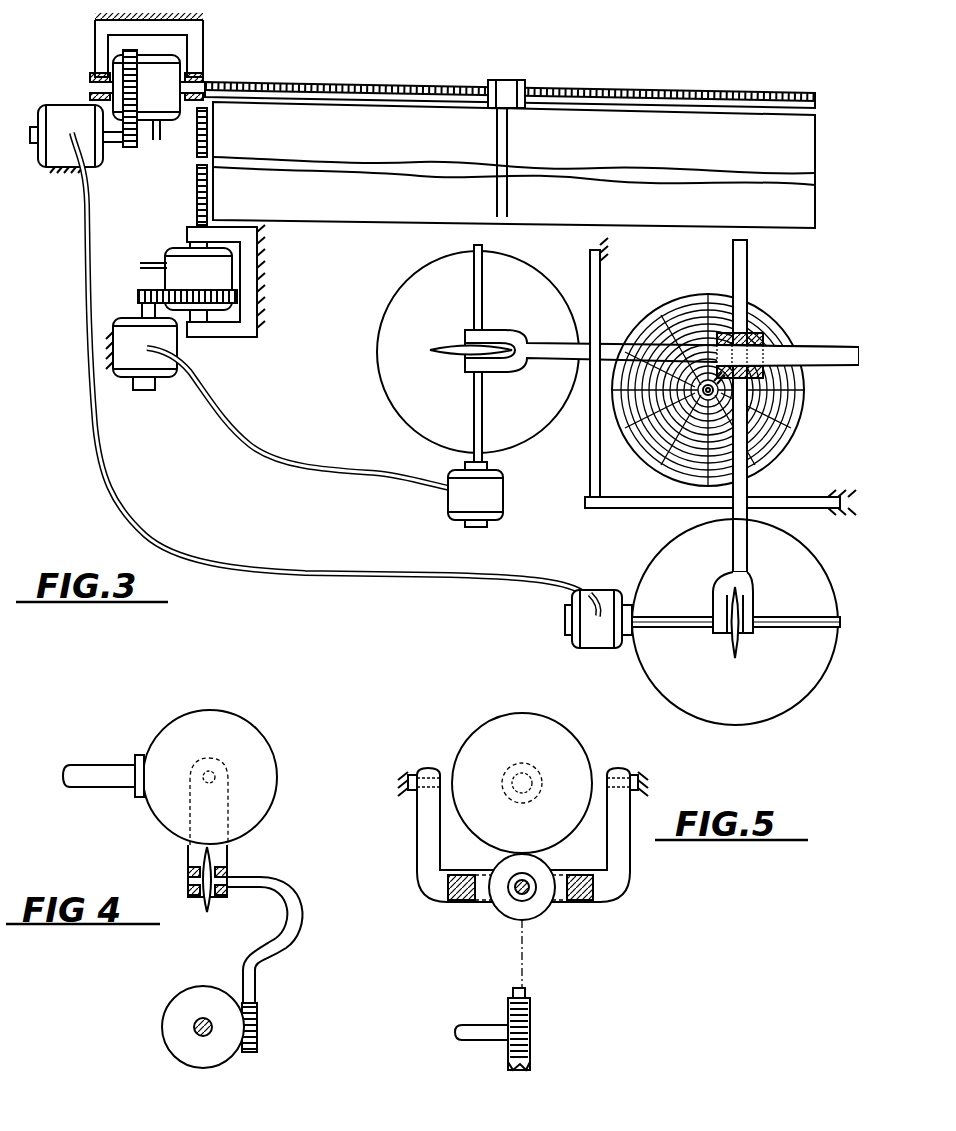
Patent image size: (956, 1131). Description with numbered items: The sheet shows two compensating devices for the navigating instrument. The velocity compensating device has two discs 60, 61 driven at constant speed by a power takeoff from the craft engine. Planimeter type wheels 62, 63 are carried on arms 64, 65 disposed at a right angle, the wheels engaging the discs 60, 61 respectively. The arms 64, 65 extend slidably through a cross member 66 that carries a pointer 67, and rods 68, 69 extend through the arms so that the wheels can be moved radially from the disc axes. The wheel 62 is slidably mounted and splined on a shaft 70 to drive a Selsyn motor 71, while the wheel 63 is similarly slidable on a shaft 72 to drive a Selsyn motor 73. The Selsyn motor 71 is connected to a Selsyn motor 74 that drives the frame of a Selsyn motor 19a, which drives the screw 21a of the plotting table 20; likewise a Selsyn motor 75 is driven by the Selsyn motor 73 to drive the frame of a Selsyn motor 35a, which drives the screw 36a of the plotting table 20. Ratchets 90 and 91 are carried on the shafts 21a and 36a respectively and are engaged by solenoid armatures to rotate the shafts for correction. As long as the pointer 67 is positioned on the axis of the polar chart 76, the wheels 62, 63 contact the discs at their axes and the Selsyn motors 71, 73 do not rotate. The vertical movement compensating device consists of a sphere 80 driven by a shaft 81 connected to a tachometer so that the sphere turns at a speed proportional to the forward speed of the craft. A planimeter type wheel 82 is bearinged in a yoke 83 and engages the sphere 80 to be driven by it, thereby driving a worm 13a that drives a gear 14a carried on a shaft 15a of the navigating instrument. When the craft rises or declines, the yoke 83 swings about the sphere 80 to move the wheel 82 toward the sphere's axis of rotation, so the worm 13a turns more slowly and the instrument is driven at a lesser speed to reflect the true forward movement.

In FIG. 4, the worm 13a is at (260, 1023).
In FIG. 5, the worm 13a is at (533, 1023).
In FIG. 4, the gear 14a is at (175, 1047).
In FIG. 5, the gear 14a is at (530, 1072).
In FIG. 4, the shaft 15a is at (204, 1037).
In FIG. 5, the shaft 15a is at (470, 1042).
In FIG. 3, the Selsyn motor 19a is at (218, 272).
In FIG. 3, the plotting table 20 is at (814, 166).
In FIG. 3, the screw 21a is at (209, 190).
In FIG. 3, the Selsyn motor 35a is at (165, 72).
In FIG. 3, the screw 36a is at (325, 88).
In FIG. 3, the disc 60 is at (405, 292).
In FIG. 3, the disc 61 is at (664, 560).
In FIG. 3, the planimeter type wheel 62 is at (434, 350).
In FIG. 3, the planimeter type wheel 63 is at (736, 650).
In FIG. 3, the arm 64 is at (558, 346).
In FIG. 3, the arm 65 is at (746, 545).
In FIG. 3, the cross member 66 is at (752, 333).
In FIG. 3, the pointer 67 is at (714, 394).
In FIG. 3, the rod 68 is at (590, 455).
In FIG. 3, the rod 69 is at (632, 497).
In FIG. 3, the shaft 70 is at (474, 410).
In FIG. 3, the Selsyn motor 71 is at (500, 508).
In FIG. 3, the shaft 72 is at (795, 628).
In FIG. 3, the Selsyn motor 73 is at (590, 648).
In FIG. 3, the Selsyn motor 74 is at (172, 352).
In FIG. 3, the Selsyn motor 75 is at (58, 162).
In FIG. 3, the polar chart 76 is at (800, 417).
In FIG. 4, the sphere 80 is at (194, 712).
In FIG. 5, the sphere 80 is at (534, 722).
In FIG. 4, the shaft 81 is at (112, 770).
In FIG. 5, the shaft 81 is at (528, 786).
In FIG. 4, the planimeter type wheel 82 is at (204, 900).
In FIG. 5, the planimeter type wheel 82 is at (538, 908).
In FIG. 4, the yoke 83 is at (186, 856).
In FIG. 5, the yoke 83 is at (626, 880).
In FIG. 3, the ratchet 90 is at (152, 262).
In FIG. 3, the ratchet 91 is at (163, 132).